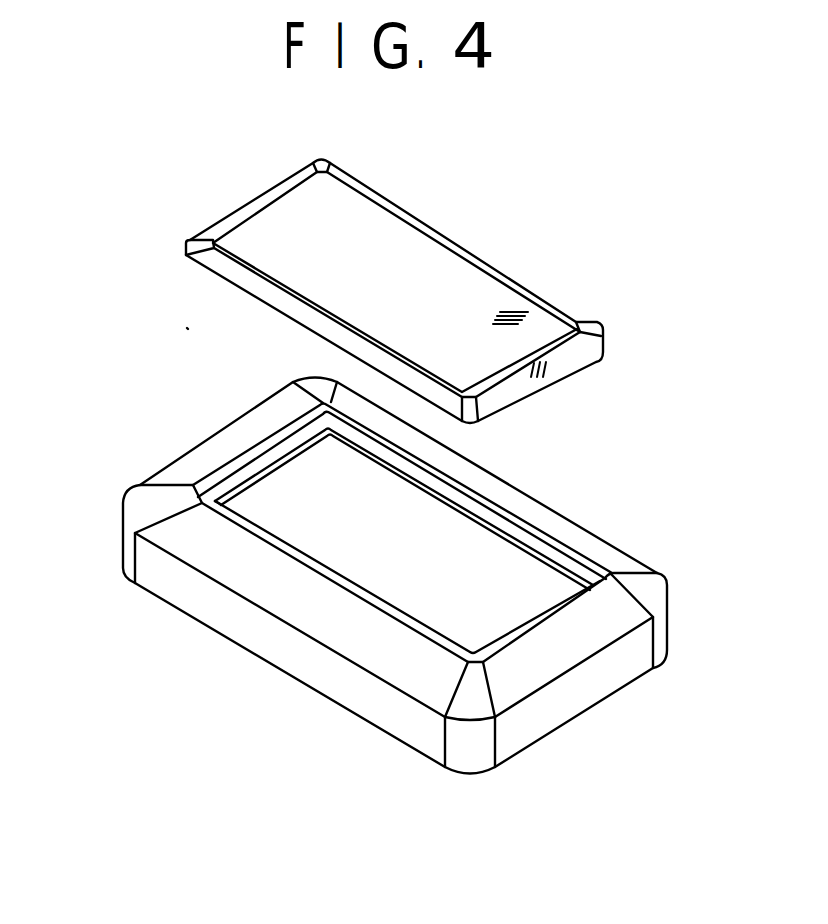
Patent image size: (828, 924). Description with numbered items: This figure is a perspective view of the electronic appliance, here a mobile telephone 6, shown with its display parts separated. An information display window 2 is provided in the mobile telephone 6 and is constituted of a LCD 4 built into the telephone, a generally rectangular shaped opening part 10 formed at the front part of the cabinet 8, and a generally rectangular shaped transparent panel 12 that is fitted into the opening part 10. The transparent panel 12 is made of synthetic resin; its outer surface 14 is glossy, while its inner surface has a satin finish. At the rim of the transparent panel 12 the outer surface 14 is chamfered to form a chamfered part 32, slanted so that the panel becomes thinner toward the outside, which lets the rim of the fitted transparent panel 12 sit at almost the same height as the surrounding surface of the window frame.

The information display window 2 is at (323, 482).
The LCD 4 is at (463, 536).
The mobile telephone 6 is at (186, 323).
The cabinet 8 is at (594, 541).
The opening part 10 is at (256, 490).
The transparent panel 12 is at (415, 247).
The outer surface 14 is at (513, 308).
The chamfered part 32 is at (547, 362).